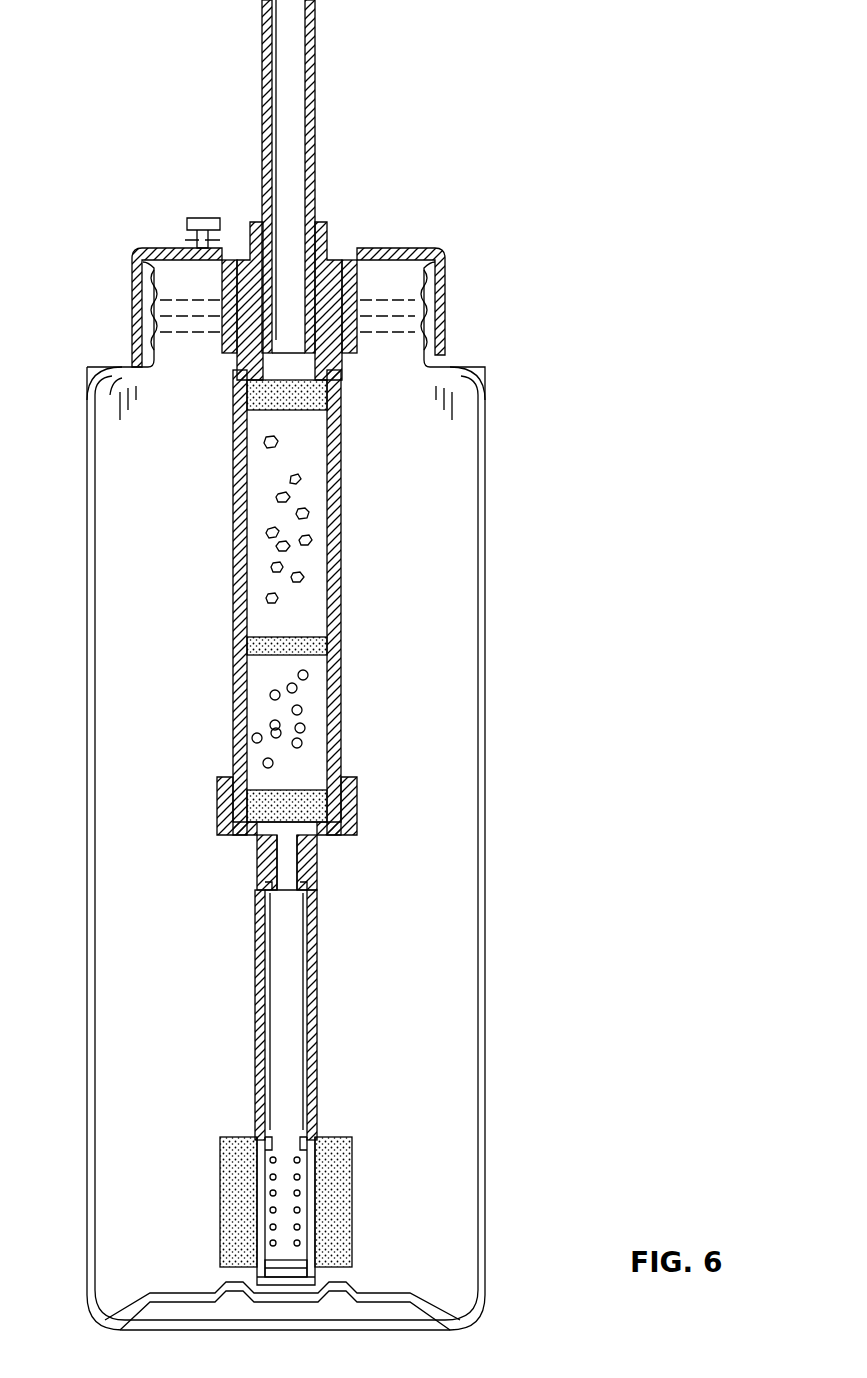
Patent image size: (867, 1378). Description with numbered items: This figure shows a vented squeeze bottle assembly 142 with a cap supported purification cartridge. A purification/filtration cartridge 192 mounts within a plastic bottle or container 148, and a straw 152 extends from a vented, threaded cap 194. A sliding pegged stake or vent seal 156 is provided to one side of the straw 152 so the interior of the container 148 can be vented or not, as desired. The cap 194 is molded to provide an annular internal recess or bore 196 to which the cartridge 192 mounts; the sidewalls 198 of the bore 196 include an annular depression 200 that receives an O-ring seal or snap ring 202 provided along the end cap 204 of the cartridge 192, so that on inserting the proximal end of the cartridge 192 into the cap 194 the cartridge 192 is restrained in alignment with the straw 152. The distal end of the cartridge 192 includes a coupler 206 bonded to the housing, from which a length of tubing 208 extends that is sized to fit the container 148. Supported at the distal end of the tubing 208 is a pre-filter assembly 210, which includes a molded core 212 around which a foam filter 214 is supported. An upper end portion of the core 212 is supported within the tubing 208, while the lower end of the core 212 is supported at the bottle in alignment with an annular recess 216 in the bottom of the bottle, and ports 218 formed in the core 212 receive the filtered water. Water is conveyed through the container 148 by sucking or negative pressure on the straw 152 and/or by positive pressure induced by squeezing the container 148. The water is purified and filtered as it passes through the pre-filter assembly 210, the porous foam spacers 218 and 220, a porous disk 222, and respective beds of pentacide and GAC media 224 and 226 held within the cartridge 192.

The assembly 142 is at (600, 848).
The container 148 is at (485, 668).
The straw 152 is at (316, 95).
The vent seal 156 is at (203, 216).
The purification/filtration cartridge 192 is at (345, 480).
The cap 194 is at (440, 306).
The bore 196 is at (335, 330).
The sidewalls 198 is at (232, 325).
The annular depression 200 is at (230, 290).
The snap ring 202 is at (340, 275).
The end cap 204 is at (318, 268).
The coupler 206 is at (357, 808).
The tubing 208 is at (317, 962).
The pre-filter assembly 210 is at (356, 1214).
The core 212 is at (290, 1137).
The foam filter 214 is at (222, 1192).
The annular recess 216 is at (265, 1280).
The ports 218 is at (260, 795).
The porous foam spacer 220 is at (330, 398).
The porous disk 222 is at (328, 645).
The pentacide media bed 224 is at (305, 712).
The GAC media bed 226 is at (306, 548).